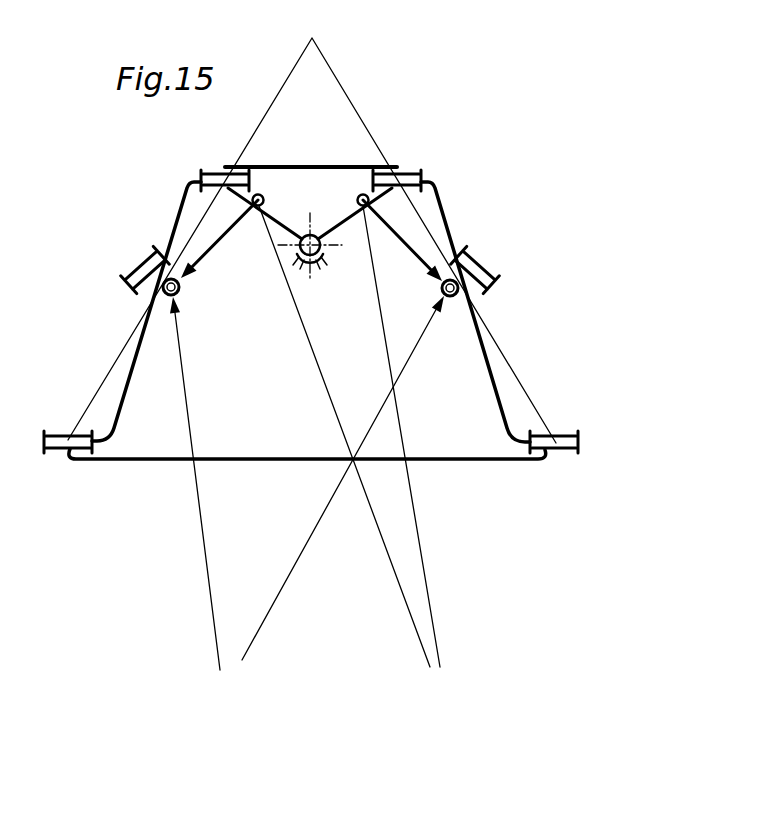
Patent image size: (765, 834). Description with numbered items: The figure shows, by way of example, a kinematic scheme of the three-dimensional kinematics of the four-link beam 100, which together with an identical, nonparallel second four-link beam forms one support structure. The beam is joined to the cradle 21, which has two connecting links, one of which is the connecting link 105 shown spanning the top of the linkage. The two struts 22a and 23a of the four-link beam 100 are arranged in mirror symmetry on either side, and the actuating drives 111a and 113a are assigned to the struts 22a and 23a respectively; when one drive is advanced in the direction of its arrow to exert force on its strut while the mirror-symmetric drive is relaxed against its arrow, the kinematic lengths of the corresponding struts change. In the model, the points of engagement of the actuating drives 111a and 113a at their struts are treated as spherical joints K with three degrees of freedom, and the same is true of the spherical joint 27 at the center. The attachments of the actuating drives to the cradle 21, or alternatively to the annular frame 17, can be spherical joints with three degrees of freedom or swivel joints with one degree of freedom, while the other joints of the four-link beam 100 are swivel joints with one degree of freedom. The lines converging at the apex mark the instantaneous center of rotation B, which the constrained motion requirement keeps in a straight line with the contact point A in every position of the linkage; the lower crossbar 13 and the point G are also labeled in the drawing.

The four-link beam 100 is at (146, 160).
The connecting link 105 is at (313, 182).
The cradle 21 is at (300, 157).
The strut 22a is at (157, 187).
The strut 23a is at (450, 177).
The lower crossbeam 13 is at (293, 460).
The instantaneous center of rotation B is at (312, 38).
The contact point A is at (369, 203).
The annular frame 17 is at (318, 268).
The spherical joint 27 is at (304, 265).
The actuating drive 111a is at (220, 246).
The actuating drive 113a is at (448, 300).
The spherical joint K is at (307, 509).
The point G is at (351, 464).